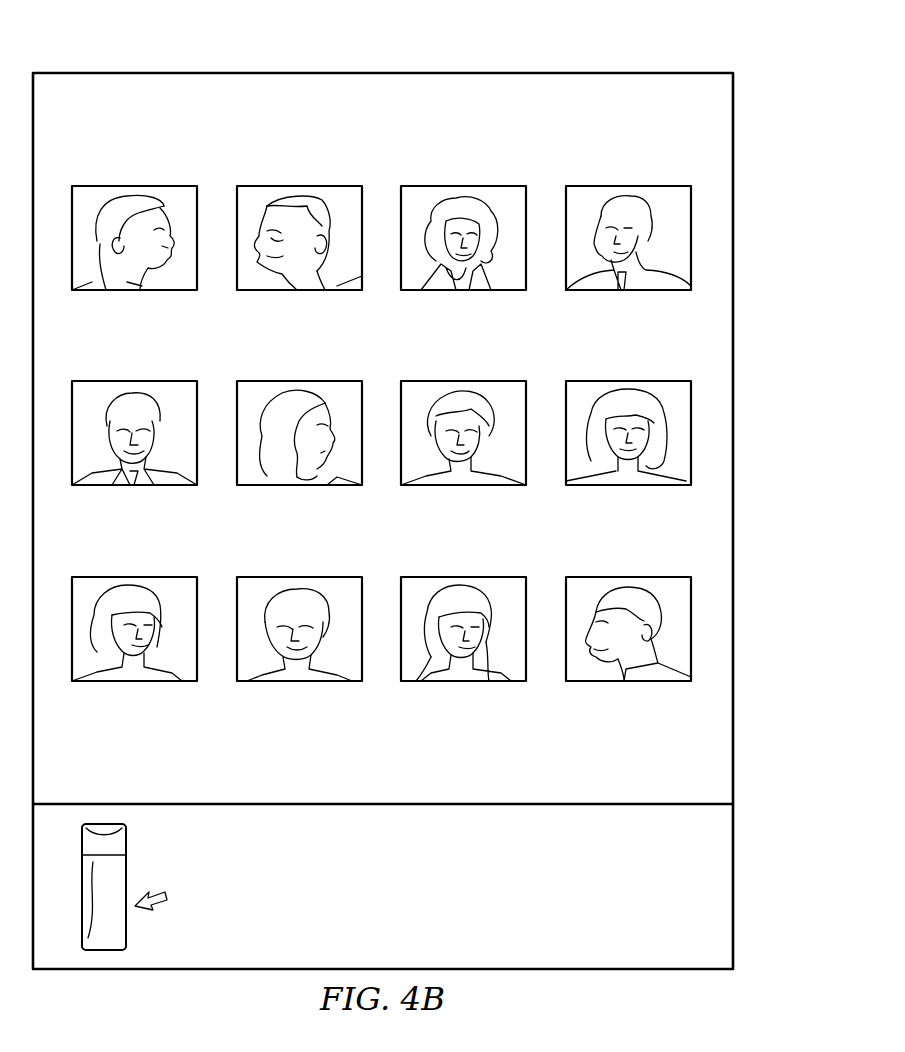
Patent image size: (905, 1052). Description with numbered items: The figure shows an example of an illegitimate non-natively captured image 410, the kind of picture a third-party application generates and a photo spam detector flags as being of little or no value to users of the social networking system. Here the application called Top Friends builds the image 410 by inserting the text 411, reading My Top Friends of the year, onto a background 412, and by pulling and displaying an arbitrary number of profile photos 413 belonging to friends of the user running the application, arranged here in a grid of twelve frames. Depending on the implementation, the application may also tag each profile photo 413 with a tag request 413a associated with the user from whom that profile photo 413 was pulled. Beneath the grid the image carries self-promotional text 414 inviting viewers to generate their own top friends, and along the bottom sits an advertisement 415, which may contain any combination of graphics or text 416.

The illegitimate non-natively captured image 410 is at (103, 70).
The text 411 is at (500, 116).
The background 412 is at (716, 149).
The profile photos 413 is at (370, 421).
The tag request 413a is at (87, 292).
The self-promotional text 414 is at (612, 742).
The advertisement 415 is at (716, 837).
The graphics or text 416 is at (660, 897).